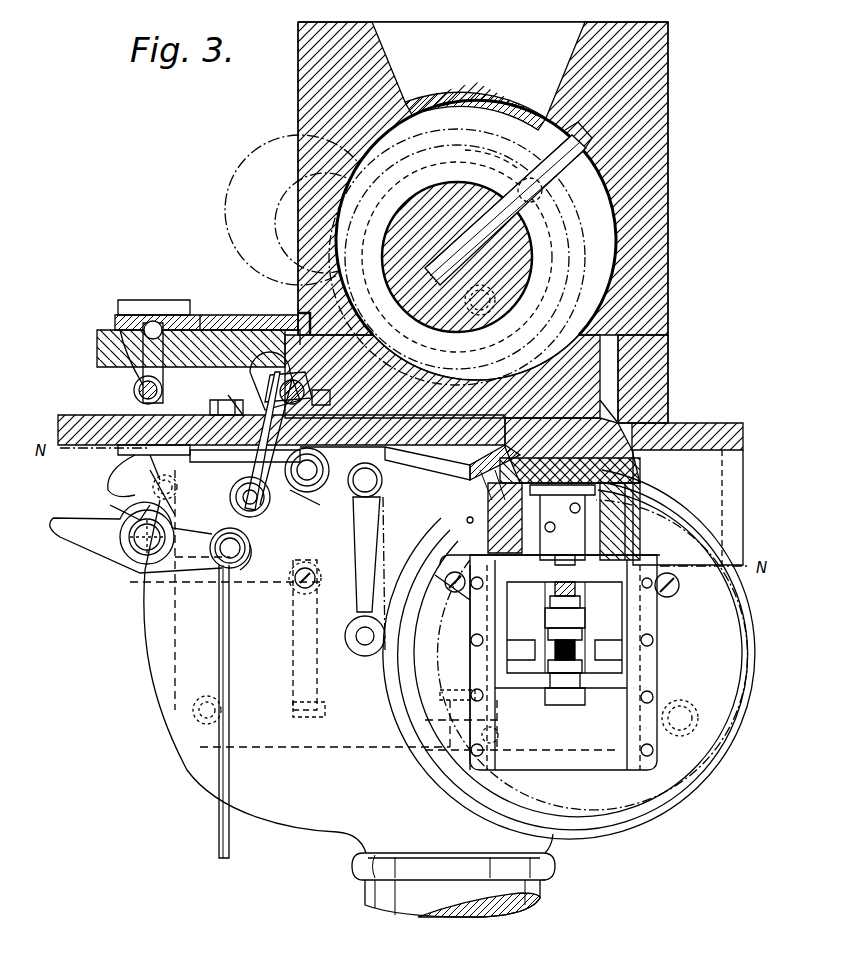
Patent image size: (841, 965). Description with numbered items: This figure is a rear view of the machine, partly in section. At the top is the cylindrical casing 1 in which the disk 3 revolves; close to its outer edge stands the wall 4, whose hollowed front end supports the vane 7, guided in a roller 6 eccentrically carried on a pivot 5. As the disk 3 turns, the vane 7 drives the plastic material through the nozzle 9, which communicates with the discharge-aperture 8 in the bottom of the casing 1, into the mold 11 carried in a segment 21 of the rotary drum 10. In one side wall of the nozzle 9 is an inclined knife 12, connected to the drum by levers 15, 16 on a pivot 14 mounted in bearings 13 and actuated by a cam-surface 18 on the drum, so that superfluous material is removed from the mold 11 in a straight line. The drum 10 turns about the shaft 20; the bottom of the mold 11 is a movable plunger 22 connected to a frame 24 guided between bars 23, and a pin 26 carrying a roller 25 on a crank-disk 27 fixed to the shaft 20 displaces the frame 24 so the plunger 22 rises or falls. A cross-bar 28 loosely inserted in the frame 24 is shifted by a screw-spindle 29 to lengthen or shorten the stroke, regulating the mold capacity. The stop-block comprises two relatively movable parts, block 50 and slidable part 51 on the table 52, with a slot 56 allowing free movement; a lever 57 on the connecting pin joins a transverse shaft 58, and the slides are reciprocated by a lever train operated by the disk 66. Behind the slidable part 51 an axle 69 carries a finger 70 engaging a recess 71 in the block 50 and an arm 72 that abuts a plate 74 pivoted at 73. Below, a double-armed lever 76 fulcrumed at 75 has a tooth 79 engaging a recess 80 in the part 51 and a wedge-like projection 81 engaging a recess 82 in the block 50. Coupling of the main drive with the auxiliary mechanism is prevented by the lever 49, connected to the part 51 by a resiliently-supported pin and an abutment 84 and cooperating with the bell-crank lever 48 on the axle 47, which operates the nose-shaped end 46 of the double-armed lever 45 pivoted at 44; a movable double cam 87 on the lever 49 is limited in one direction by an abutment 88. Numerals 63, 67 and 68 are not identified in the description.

The cylindrical casing 1 is at (298, 82).
The disk 3 is at (545, 362).
The wall 4 is at (480, 82).
The pivot 5 is at (476, 217).
The roller 6 is at (518, 256).
The vane 7 is at (560, 168).
The discharge-aperture 8 is at (577, 422).
The nozzle 9 is at (572, 450).
The rotary drum 10 is at (700, 768).
The mold 11 is at (570, 508).
The inclined knife 12 is at (512, 447).
The bearings 13 is at (385, 470).
The pivot 14 is at (365, 472).
The lever 15 is at (412, 488).
The lever 16 is at (354, 538).
The cam-surface 18 is at (465, 592).
The shaft 20 is at (548, 648).
The segment 21 is at (606, 526).
The movable plunger 22 is at (596, 462).
The bars 23 is at (470, 652).
The frame 24 is at (585, 700).
The roller 25 is at (552, 598).
The pin 26 is at (579, 629).
The crank-disk 27 is at (574, 614).
The cross-bar 28 is at (583, 654).
The screw-spindle 29 is at (578, 650).
The pivot 44 is at (445, 698).
The double-armed lever 45 is at (522, 725).
The nose-shaped end 46 is at (293, 712).
The axle 47 is at (298, 588).
The bell-crank lever 48 is at (75, 545).
The lever 49 is at (244, 464).
The block 50 is at (97, 340).
The slidable part 51 is at (190, 330).
The table 52 is at (58, 420).
The slot 56 is at (265, 355).
The lever 57 is at (300, 490).
The transverse shaft 58 is at (240, 546).
The block 63 is at (138, 340).
The disk 66 is at (480, 146).
The pin 67 is at (495, 300).
The pin 68 is at (520, 185).
The axle 69 is at (134, 392).
The finger 70 is at (153, 362).
The recess 71 is at (135, 380).
The arm 72 is at (110, 470).
The pivot 73 is at (135, 555).
The plate 74 is at (178, 500).
The fulcrum 75 is at (305, 510).
The double-armed lever 76 is at (475, 530).
The tooth 79 is at (226, 392).
The recess 80 is at (250, 385).
The wedge-like projection 81 is at (241, 400).
The recess 82 is at (324, 396).
The abutment 84 is at (208, 330).
The double cam 87 is at (135, 512).
The abutment 88 is at (141, 467).